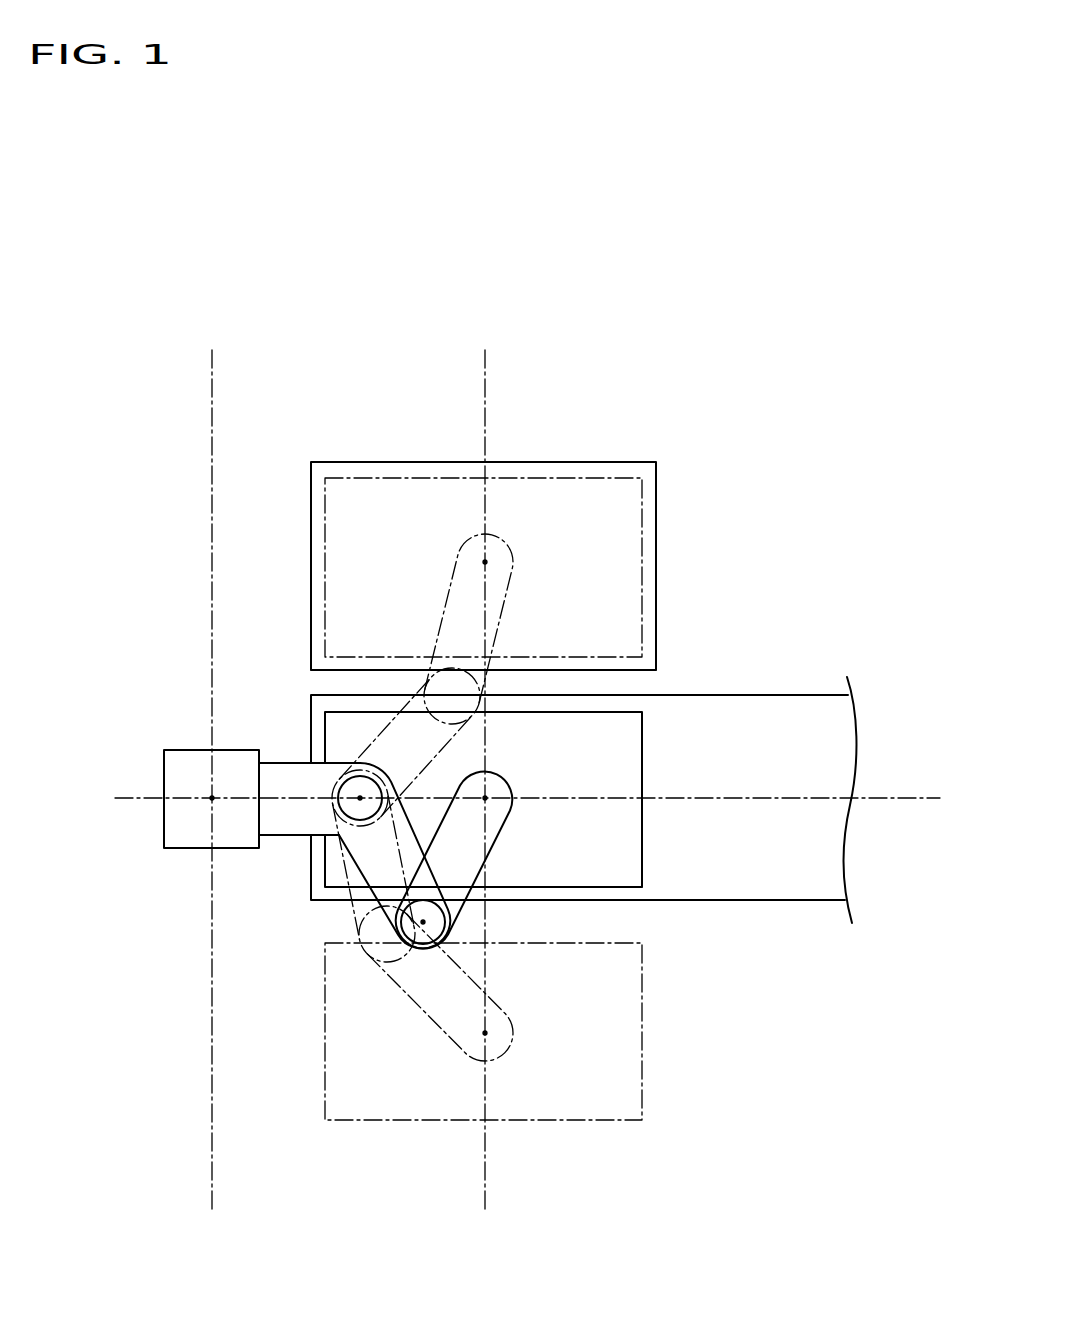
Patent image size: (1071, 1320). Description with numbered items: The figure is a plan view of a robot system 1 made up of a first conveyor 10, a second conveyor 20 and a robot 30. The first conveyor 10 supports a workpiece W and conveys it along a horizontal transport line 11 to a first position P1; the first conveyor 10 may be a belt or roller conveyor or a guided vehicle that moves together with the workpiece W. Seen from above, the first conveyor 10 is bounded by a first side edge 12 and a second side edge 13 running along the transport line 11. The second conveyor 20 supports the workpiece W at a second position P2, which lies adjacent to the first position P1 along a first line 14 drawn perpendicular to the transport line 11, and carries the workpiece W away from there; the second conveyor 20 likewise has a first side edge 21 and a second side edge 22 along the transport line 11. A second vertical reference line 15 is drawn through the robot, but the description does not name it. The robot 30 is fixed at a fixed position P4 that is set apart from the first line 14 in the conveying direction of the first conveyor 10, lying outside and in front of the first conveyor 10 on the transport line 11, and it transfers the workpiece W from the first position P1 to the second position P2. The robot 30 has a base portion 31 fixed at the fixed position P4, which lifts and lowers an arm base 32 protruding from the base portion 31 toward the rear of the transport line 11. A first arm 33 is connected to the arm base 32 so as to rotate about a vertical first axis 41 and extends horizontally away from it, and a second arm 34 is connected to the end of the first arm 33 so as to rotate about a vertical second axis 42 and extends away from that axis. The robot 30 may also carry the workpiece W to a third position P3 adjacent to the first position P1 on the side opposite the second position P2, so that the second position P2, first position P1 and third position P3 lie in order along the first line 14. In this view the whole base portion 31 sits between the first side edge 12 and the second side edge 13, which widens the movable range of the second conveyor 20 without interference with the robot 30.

The robot system 1 is at (92, 504).
The first conveyor 10 is at (583, 876).
The transport line 11 is at (907, 793).
The first side edge 12 is at (708, 695).
The second side edge 13 is at (802, 902).
The first line 14 is at (485, 387).
The vertical axis through P4 15 is at (212, 387).
The second conveyor 20 is at (527, 542).
The first side edge 21 is at (575, 462).
The second side edge 22 is at (590, 686).
The robot 30 is at (152, 711).
The base portion 31 is at (188, 762).
The arm base 32 is at (282, 772).
The first arm 33 is at (385, 853).
The second arm 34 is at (448, 878).
The first axis 41 is at (358, 800).
The second axis 42 is at (421, 924).
The workpiece W is at (642, 857).
The first position P1 is at (487, 800).
The second position P2 is at (483, 562).
The third position P3 is at (490, 1035).
The fixed position P4 is at (209, 802).